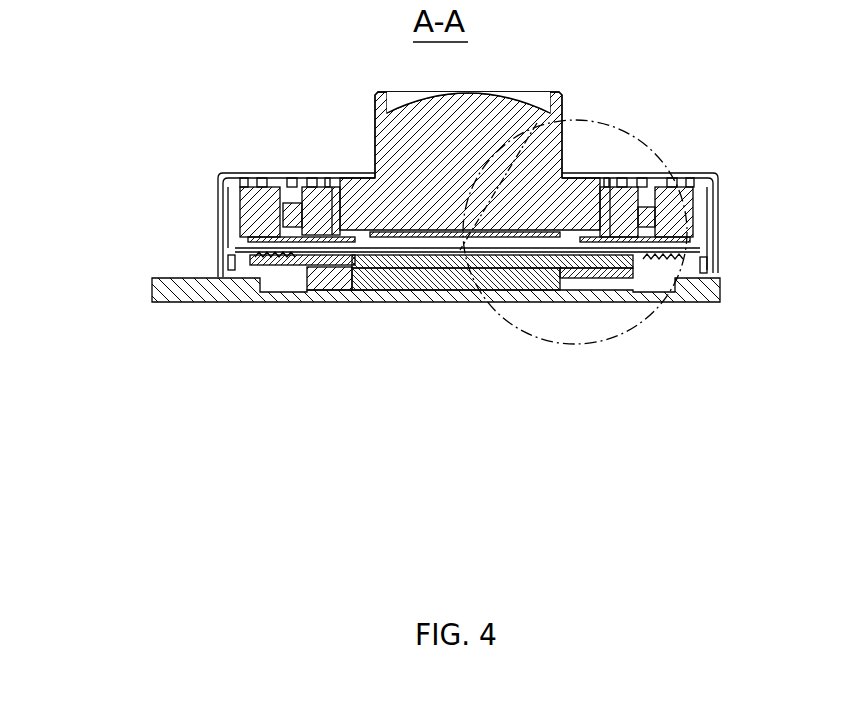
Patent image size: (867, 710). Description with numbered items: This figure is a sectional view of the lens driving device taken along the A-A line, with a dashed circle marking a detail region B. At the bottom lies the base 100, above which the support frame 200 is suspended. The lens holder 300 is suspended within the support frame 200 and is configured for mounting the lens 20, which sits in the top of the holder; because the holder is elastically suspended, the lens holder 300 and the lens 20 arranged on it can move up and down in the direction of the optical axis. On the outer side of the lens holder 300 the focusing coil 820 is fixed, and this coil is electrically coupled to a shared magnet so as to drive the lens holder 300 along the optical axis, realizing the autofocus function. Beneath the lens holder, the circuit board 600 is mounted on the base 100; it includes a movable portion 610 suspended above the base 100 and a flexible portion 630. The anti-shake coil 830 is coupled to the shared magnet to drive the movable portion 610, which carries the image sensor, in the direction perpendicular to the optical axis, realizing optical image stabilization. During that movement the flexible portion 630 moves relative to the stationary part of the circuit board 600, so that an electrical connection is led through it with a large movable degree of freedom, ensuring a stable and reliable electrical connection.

The lens 20 is at (397, 142).
The base 100 is at (237, 293).
The support frame 200 is at (223, 197).
The lens holder 300 is at (300, 237).
The circuit board 600 is at (360, 243).
The movable portion 610 is at (250, 260).
The flexible portion 630 is at (227, 228).
The focusing coil 820 is at (250, 210).
The anti-shake coil 830 is at (320, 272).
The detail region B is at (660, 280).